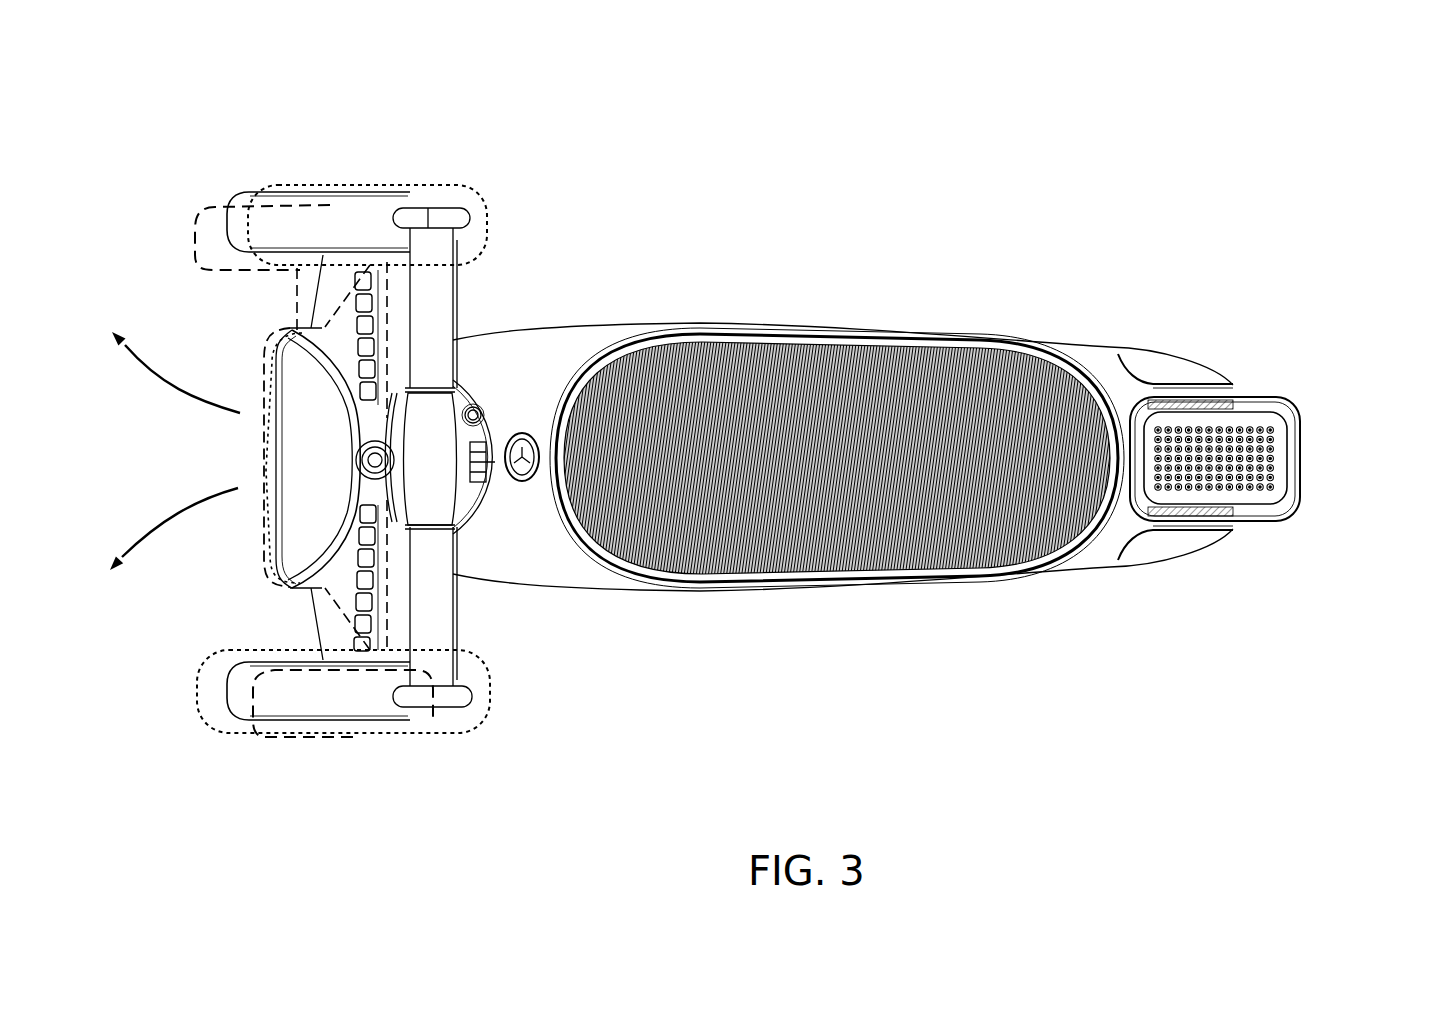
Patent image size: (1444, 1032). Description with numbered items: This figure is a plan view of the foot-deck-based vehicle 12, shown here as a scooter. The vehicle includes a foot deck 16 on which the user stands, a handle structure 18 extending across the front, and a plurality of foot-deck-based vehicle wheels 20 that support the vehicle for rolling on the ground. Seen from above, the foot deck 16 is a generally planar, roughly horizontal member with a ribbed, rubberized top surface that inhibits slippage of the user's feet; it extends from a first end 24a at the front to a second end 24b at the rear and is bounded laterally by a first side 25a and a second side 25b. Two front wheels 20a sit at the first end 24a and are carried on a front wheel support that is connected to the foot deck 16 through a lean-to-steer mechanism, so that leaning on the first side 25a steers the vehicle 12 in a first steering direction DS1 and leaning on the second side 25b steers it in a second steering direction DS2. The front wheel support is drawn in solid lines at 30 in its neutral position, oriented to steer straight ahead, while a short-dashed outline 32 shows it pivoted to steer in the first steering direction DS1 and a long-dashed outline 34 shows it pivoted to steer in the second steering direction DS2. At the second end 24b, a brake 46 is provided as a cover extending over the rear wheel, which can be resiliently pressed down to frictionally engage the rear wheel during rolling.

The foot-deck-based vehicle 12 is at (1032, 107).
The foot deck 16 is at (780, 337).
The handle structure 18 is at (433, 588).
The foot-deck-based vehicle wheels 20 is at (312, 220).
The front wheel 20a is at (347, 705).
The first end 24a is at (240, 447).
The second end 24b is at (1246, 365).
The first side 25a is at (890, 300).
The second side 25b is at (863, 617).
The neutral position 30 is at (357, 207).
The short-dashed outline 32 is at (483, 217).
The long-dashed outline 34 is at (198, 220).
The brake 46 is at (1247, 487).
The first steering direction DS1 is at (155, 380).
The second steering direction DS2 is at (170, 513).